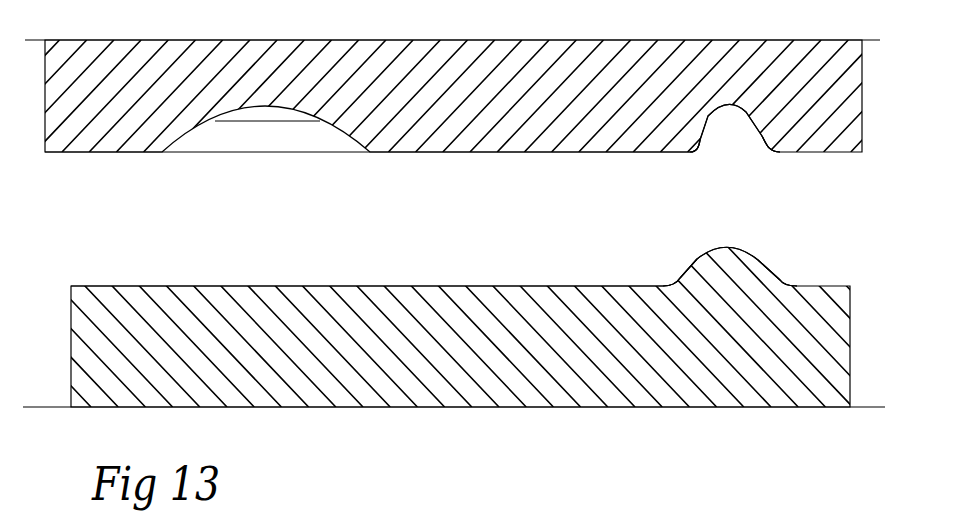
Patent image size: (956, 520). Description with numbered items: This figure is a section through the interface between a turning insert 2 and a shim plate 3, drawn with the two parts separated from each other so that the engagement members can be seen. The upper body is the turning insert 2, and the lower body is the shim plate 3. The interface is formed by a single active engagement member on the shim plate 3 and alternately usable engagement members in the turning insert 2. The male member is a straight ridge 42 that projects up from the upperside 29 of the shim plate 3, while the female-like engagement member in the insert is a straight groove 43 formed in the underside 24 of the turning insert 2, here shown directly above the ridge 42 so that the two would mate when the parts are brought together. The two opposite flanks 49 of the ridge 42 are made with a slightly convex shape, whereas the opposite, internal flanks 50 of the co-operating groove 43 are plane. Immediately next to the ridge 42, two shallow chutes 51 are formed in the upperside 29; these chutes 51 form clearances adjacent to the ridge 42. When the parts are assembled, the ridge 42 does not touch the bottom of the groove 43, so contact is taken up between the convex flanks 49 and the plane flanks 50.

The turning insert 2 is at (75, 183).
The shim plate 3 is at (158, 265).
The lower surface of upper mould part 24 is at (437, 154).
The upperside of the shim plate 29 is at (346, 287).
The ridge 42 is at (748, 232).
The groove 43 is at (728, 117).
The flanks of the ridge 49 is at (697, 267).
The internal flanks of the groove 50 is at (684, 146).
The shallow chutes 51 is at (672, 288).